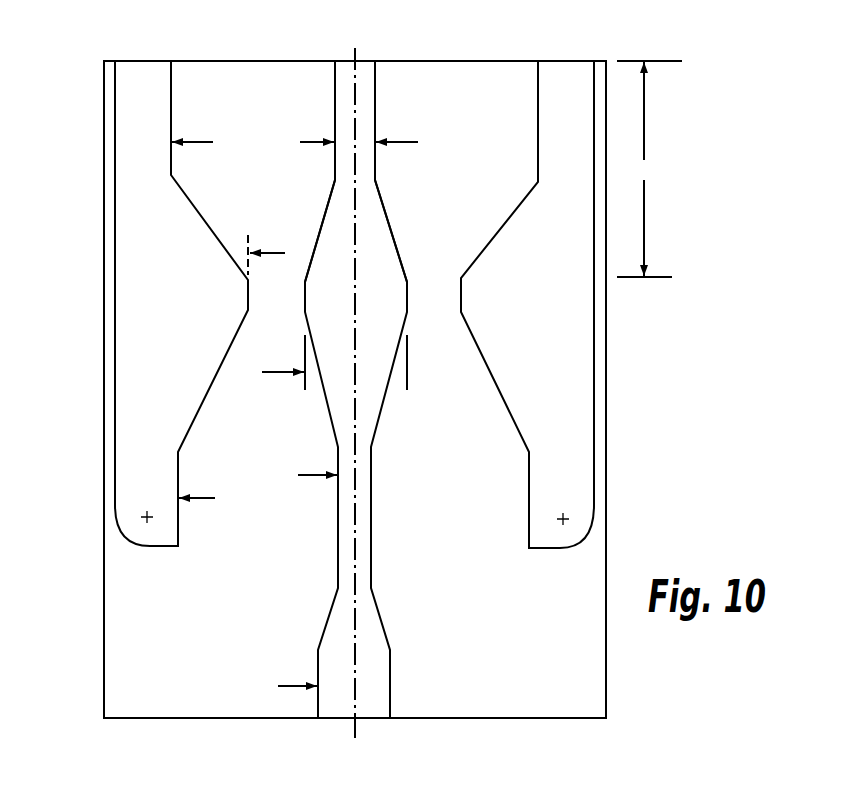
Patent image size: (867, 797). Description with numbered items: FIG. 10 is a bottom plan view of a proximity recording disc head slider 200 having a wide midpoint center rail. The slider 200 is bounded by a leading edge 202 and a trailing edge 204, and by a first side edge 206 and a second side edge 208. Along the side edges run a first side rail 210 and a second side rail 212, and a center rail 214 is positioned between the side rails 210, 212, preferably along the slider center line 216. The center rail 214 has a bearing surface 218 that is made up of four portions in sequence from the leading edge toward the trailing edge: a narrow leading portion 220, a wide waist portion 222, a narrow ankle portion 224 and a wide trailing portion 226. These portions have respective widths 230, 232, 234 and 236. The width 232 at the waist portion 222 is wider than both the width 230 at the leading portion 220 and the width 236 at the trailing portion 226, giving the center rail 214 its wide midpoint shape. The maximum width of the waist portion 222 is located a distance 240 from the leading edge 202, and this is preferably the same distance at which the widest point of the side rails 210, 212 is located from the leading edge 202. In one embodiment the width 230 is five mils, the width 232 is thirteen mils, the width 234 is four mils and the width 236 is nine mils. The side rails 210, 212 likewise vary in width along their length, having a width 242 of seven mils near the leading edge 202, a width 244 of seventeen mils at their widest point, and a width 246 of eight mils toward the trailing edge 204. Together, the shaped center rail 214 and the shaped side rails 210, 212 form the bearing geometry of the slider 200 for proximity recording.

The slider 200 is at (155, 45).
The leading edge 202 is at (247, 60).
The trailing edge 204 is at (160, 719).
The first side edge 206 is at (606, 303).
The second side edge 208 is at (104, 285).
The first side rail 210 is at (570, 58).
The second side rail 212 is at (140, 58).
The center rail 214 is at (365, 50).
The slider center line 216 is at (356, 730).
The bearing surface 218 is at (373, 243).
The narrow leading portion 220 is at (335, 106).
The wide waist portion 222 is at (323, 223).
The narrow ankle portion 224 is at (338, 548).
The wide trailing portion 226 is at (318, 660).
The width of leading portion 230 is at (400, 142).
The width of waist portion 232 is at (408, 372).
The width of ankle portion 234 is at (372, 475).
The width of trailing portion 236 is at (391, 686).
The distance from leading edge 240 is at (644, 170).
The side rail width 242 is at (114, 142).
The side rail width 244 is at (114, 253).
The side rail width 246 is at (114, 498).